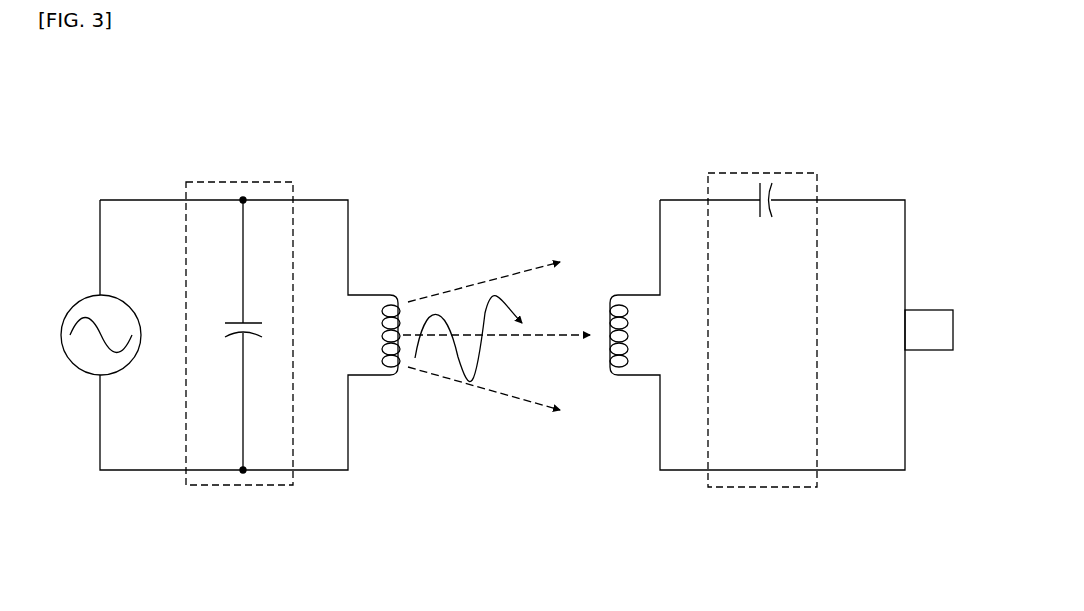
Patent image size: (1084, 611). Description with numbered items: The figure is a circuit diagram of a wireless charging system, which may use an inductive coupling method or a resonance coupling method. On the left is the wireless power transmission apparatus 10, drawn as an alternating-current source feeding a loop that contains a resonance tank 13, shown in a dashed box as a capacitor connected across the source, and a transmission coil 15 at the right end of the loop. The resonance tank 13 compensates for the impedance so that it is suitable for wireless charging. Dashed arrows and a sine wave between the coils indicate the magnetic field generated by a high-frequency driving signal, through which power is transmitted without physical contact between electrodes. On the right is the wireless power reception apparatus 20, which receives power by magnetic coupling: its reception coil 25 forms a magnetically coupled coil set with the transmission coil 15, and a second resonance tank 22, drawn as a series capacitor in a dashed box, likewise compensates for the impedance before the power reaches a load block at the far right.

The wireless power transmission apparatus 10 is at (117, 178).
The resonance tank 13 is at (265, 182).
The transmission coil 15 is at (372, 285).
The wireless power reception apparatus 20 is at (865, 180).
The resonance tank 22 is at (788, 173).
The reception coil 25 is at (627, 285).